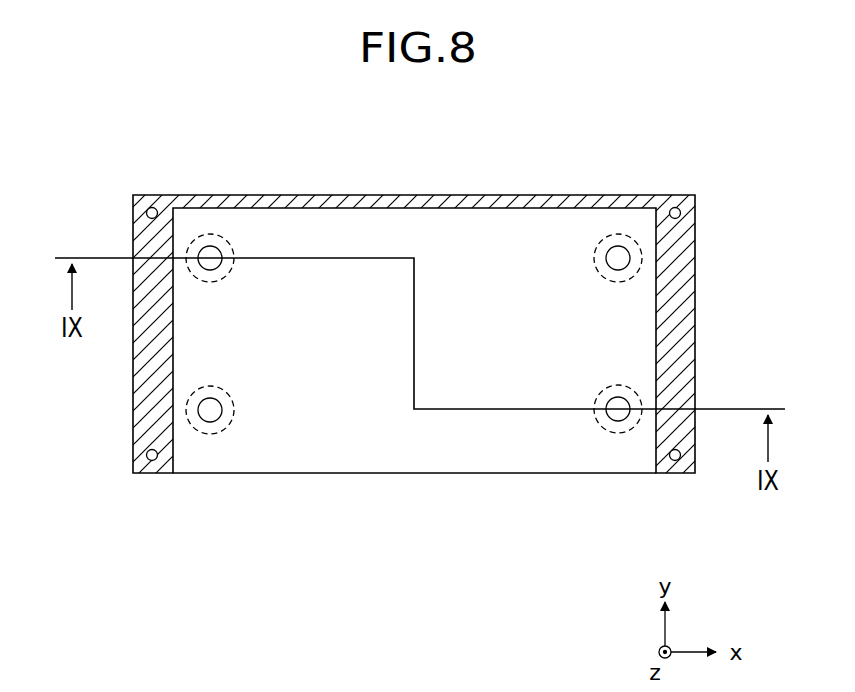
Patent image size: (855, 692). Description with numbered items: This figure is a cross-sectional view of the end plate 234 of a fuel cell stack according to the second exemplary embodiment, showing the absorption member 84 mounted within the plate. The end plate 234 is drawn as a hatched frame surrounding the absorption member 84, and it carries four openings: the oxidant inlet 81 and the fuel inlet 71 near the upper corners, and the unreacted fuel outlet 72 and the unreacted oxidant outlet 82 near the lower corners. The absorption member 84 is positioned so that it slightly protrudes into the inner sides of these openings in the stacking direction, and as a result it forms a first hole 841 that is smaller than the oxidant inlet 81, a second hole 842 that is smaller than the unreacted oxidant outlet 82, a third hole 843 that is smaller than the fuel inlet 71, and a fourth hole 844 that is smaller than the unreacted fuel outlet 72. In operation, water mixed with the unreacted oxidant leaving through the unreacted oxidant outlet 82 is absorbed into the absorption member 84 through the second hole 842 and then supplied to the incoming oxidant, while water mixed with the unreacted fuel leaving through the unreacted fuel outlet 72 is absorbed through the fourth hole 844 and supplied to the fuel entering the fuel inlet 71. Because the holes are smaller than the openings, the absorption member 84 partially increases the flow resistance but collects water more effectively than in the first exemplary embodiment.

The end plate 234 is at (407, 195).
The absorption member 84 is at (408, 452).
The oxidant inlet 81 is at (190, 251).
The fuel inlet 71 is at (637, 258).
The unreacted fuel outlet 72 is at (193, 412).
The unreacted oxidant outlet 82 is at (637, 398).
The first hole 841 is at (213, 258).
The second hole 842 is at (622, 420).
The third hole 843 is at (615, 258).
The fourth hole 844 is at (215, 418).